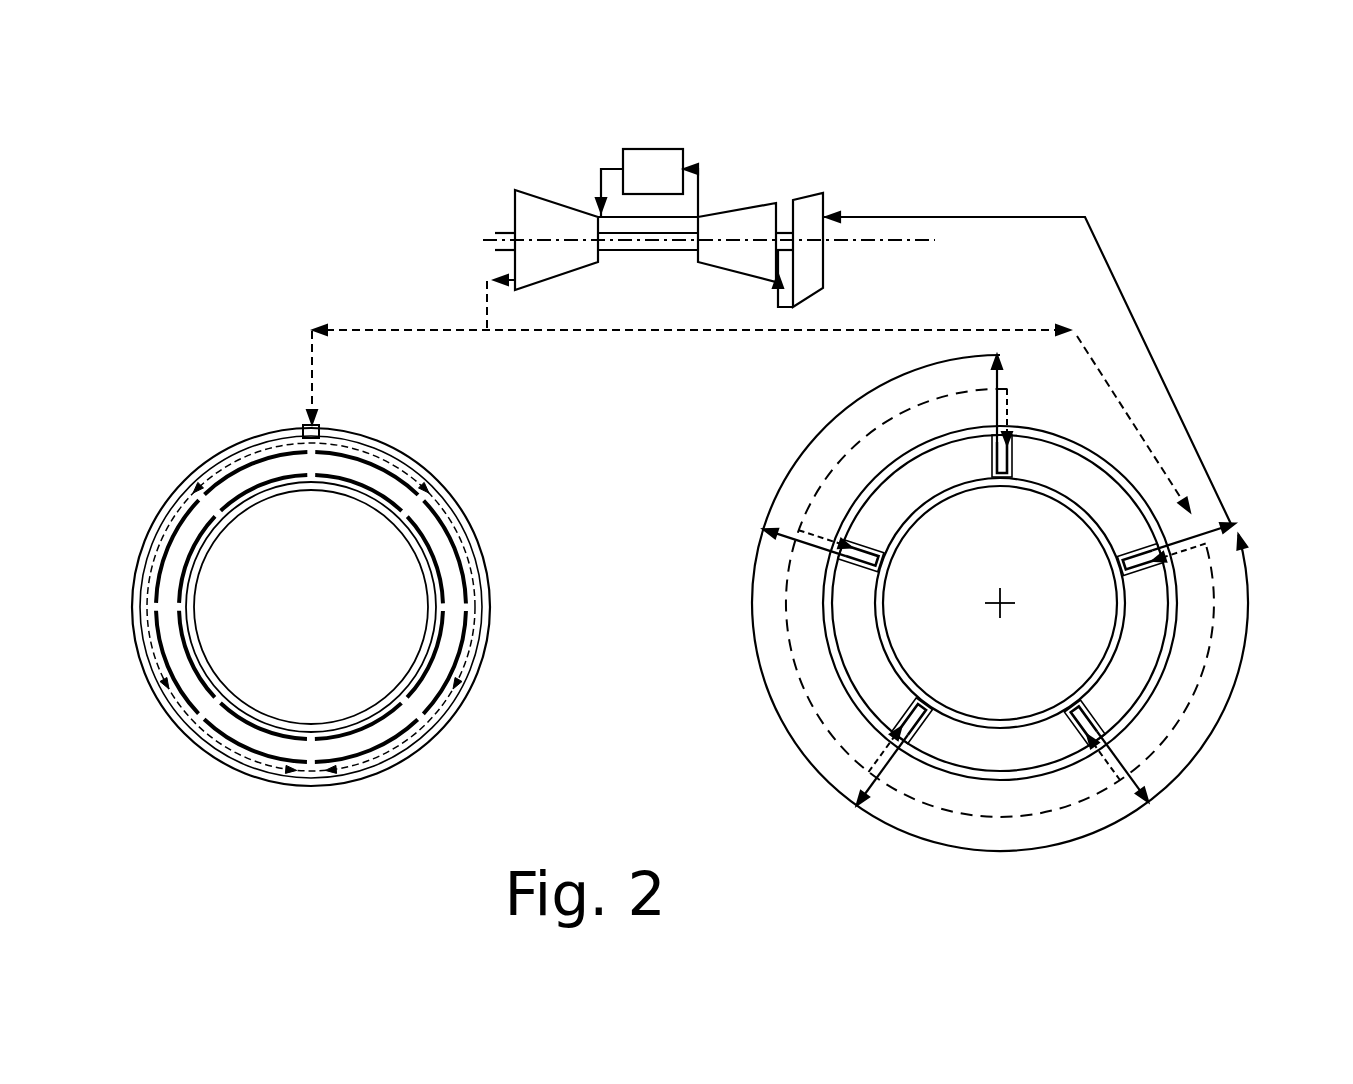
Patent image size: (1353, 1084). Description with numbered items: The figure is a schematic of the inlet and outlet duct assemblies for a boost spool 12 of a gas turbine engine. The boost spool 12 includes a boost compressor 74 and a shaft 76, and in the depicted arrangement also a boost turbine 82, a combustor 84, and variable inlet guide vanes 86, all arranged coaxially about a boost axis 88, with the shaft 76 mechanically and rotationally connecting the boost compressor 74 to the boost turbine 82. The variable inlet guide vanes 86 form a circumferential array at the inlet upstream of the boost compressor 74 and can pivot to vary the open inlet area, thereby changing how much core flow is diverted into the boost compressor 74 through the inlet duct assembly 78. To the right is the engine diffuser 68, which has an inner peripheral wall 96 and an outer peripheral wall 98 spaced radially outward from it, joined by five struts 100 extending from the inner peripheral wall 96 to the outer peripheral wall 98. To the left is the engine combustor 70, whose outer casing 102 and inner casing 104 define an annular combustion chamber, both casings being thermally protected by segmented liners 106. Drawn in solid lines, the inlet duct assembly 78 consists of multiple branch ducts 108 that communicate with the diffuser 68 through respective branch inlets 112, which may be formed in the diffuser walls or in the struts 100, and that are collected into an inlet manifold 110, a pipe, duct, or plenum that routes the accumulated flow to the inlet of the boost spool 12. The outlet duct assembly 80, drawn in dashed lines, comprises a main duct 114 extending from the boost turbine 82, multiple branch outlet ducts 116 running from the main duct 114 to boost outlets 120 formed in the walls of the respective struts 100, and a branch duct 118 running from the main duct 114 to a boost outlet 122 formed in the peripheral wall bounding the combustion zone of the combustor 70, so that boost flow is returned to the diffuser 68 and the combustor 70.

The boost spool 12 is at (709, 188).
The diffuser 68 is at (1062, 522).
The combustor 70 is at (349, 543).
The boost compressor 74 is at (747, 207).
The shaft 76 is at (650, 251).
The inlet duct assembly 78 is at (1225, 402).
The outlet duct assembly 80 is at (678, 345).
The boost turbine 82 is at (530, 192).
The combustor 84 is at (654, 149).
The variable inlet guide vanes 86 is at (826, 202).
The boost axis 88 is at (868, 243).
The inner peripheral wall 96 is at (1104, 645).
The outer peripheral wall 98 is at (1093, 448).
The struts 100 is at (1001, 598).
The outer casing 102 is at (420, 467).
The inner casing 104 is at (357, 499).
The segmented liners 106 is at (272, 481).
The branch ducts 108 is at (994, 405).
The inlet manifold 110 is at (752, 613).
The branch inlets 112 is at (992, 458).
The main duct 114 is at (483, 299).
The branch outlet ducts 116 is at (1009, 410).
The branch duct 118 is at (309, 362).
The boost outlets 120 is at (1012, 458).
The boost outlet 122 is at (318, 428).